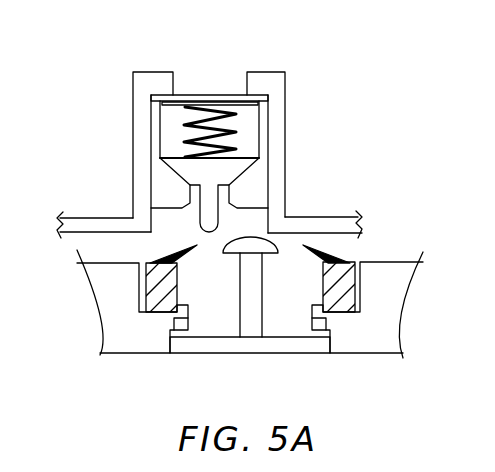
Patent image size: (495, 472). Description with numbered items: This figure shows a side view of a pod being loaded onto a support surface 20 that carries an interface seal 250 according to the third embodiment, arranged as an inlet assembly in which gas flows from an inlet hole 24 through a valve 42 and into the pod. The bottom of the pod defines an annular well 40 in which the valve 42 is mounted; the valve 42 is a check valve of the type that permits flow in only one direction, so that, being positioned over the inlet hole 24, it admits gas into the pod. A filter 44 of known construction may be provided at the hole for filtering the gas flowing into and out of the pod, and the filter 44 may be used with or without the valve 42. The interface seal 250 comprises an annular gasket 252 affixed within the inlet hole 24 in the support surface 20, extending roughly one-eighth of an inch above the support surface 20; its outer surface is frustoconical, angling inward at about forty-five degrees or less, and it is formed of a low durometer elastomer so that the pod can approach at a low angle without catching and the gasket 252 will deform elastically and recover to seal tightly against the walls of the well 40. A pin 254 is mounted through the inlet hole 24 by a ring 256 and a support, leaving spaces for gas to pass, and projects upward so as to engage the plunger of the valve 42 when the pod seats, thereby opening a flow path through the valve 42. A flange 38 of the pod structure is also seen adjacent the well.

The support surface 20 is at (113, 305).
The inlet hole 24 is at (220, 318).
The flange 38 is at (112, 227).
The annular well 40 is at (268, 115).
The valve 42 is at (253, 182).
The filter 44 is at (205, 95).
The interface seal 250 is at (302, 289).
The annular gasket 252 is at (320, 257).
The pin 254 is at (252, 322).
The ring 256 is at (188, 345).